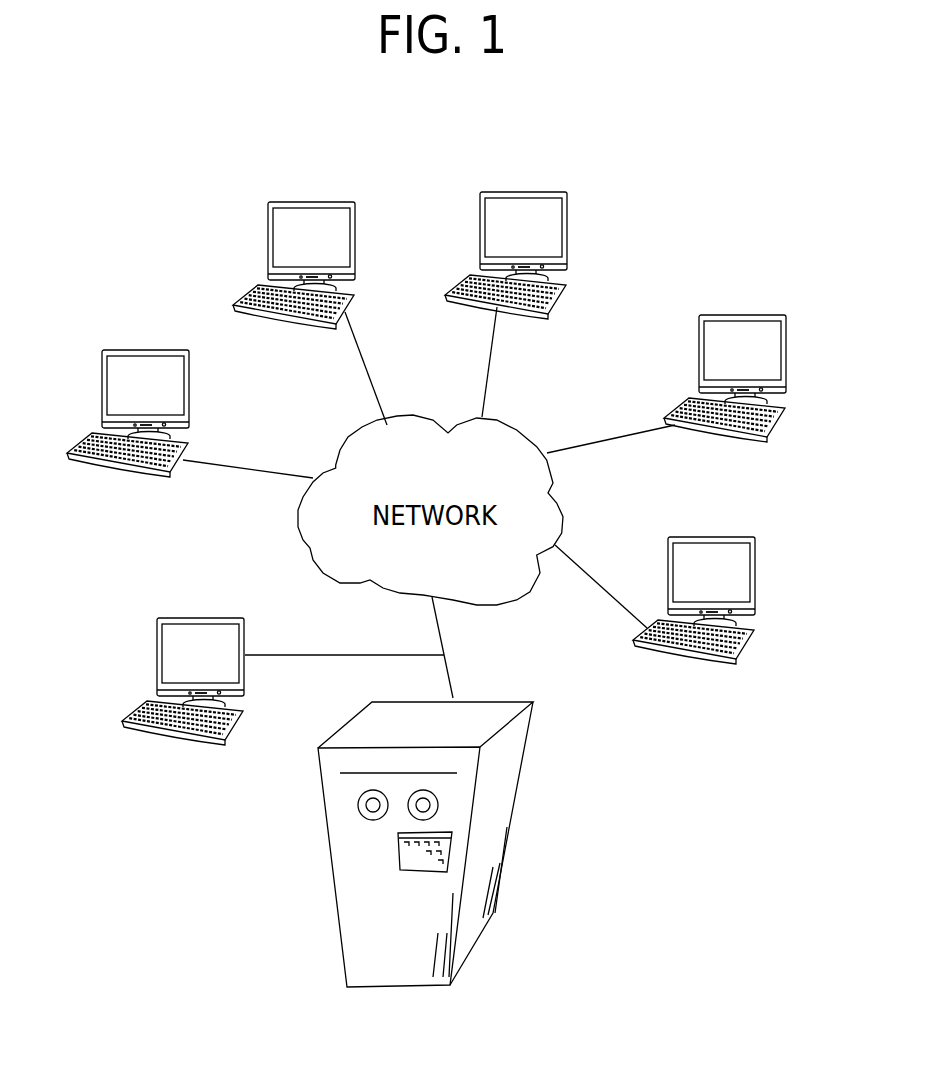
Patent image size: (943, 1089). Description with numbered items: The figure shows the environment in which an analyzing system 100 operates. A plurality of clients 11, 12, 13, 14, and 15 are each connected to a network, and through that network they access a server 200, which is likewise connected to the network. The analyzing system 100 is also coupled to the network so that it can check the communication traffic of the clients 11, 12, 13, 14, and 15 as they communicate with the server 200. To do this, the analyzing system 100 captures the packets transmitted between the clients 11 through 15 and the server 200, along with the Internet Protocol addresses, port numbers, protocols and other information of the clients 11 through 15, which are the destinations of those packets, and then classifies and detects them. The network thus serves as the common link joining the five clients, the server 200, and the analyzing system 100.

The client 11 is at (143, 350).
The client 12 is at (310, 201).
The client 13 is at (522, 191).
The client 14 is at (741, 315).
The client 15 is at (710, 538).
The analyzing system 100 is at (198, 617).
The server 200 is at (517, 800).